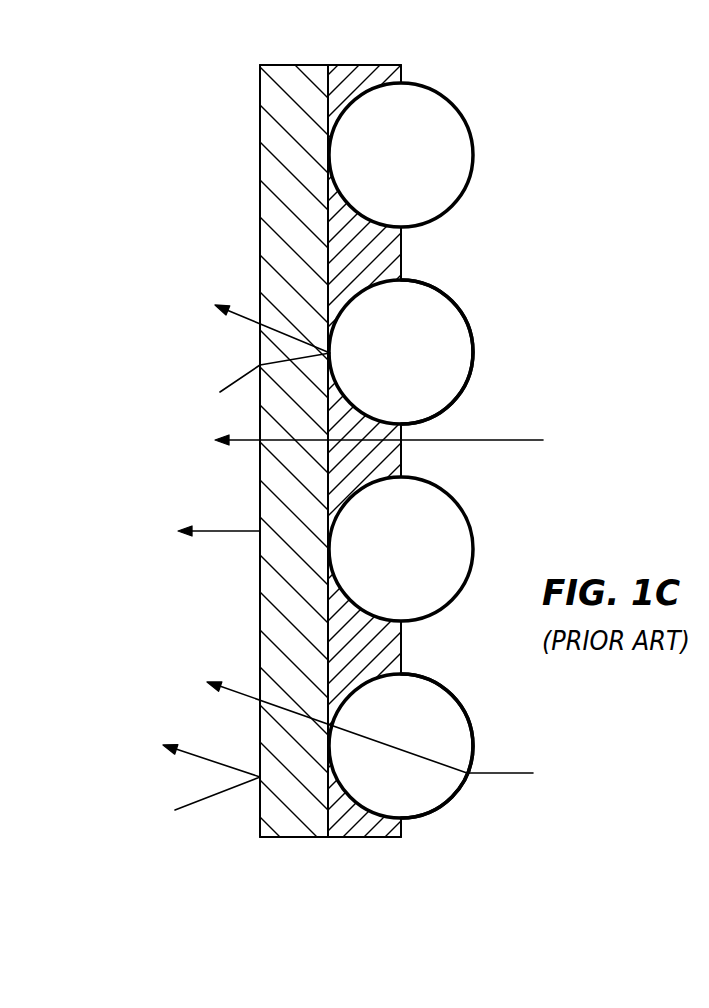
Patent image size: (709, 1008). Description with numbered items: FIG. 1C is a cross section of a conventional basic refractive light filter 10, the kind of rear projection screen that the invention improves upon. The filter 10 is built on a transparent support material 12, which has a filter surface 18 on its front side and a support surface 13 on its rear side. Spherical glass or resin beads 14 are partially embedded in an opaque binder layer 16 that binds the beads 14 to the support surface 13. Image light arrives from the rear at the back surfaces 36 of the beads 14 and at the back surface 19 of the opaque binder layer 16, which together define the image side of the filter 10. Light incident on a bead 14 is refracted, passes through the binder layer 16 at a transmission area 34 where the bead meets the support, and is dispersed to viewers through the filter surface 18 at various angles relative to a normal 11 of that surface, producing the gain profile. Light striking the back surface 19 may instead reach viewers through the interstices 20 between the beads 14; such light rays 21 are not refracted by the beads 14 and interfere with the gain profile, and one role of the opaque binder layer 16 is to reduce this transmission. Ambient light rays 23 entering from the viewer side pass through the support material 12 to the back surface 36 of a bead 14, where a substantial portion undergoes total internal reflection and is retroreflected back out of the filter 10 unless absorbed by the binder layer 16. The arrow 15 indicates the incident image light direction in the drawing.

The refractive light filter 10 is at (354, 504).
The normal of filter surface 11 is at (230, 533).
The transparent support material 12 is at (307, 835).
The support surface 13 is at (328, 838).
The beads 14 is at (455, 117).
The incident light 15 is at (532, 831).
The opaque binder layer 16 is at (378, 72).
The filter surface 18 is at (260, 838).
The back surface of opaque binder layer 19 is at (403, 461).
The interstices between beads 20 is at (328, 463).
The light rays through interstices 21 is at (480, 439).
The ambient light rays 23 is at (238, 317).
The transmission area 34 is at (330, 352).
The back surface of bead 36 is at (474, 350).